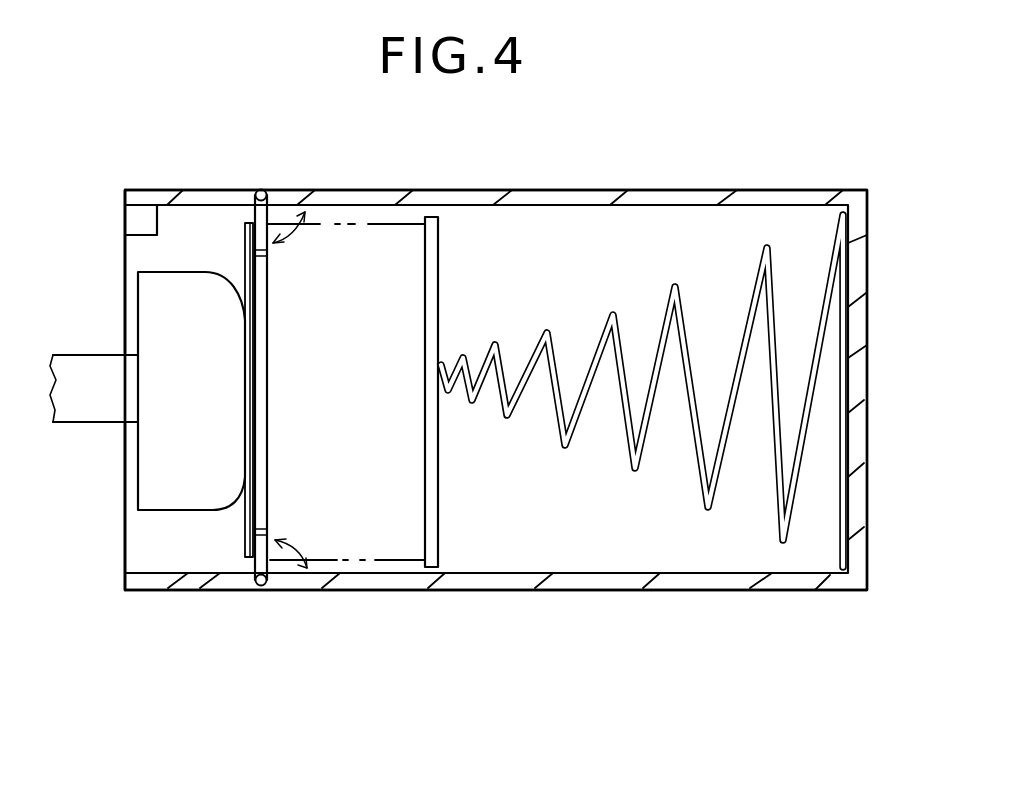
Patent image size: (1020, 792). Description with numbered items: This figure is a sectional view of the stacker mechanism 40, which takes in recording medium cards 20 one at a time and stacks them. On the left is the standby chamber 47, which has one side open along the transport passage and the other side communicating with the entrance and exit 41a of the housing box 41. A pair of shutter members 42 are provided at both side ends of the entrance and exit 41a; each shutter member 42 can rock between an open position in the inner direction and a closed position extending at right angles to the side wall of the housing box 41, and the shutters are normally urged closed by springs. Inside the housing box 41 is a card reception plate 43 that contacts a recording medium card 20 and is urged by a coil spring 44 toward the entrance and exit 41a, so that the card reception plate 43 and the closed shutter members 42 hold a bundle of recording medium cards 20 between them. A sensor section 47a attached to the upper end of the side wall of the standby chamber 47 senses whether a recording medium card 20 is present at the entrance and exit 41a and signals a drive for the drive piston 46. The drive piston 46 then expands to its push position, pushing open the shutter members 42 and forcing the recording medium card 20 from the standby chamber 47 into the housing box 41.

The recording medium card 20 is at (349, 416).
The stacker mechanism 40 is at (445, 171).
The housing box 41 is at (557, 190).
The entrance and exit 41a is at (263, 468).
The shutter member 42 is at (253, 220).
The card reception plate 43 is at (440, 507).
The coil spring 44 is at (770, 295).
The drive piston 46 is at (148, 462).
The standby chamber 47 is at (147, 533).
The sensor section 47a is at (137, 221).